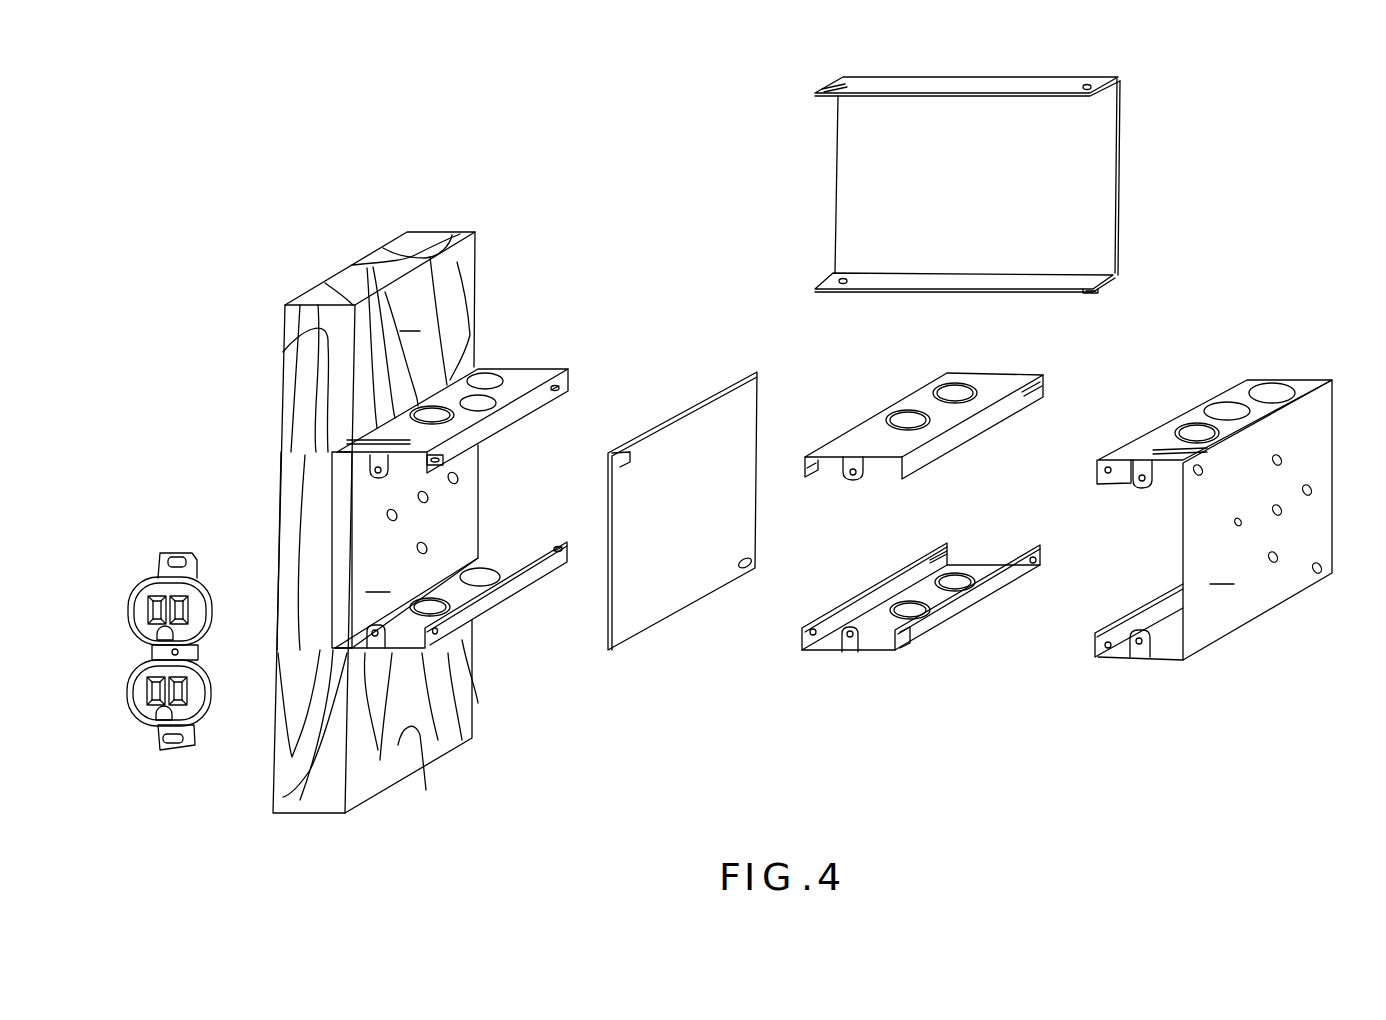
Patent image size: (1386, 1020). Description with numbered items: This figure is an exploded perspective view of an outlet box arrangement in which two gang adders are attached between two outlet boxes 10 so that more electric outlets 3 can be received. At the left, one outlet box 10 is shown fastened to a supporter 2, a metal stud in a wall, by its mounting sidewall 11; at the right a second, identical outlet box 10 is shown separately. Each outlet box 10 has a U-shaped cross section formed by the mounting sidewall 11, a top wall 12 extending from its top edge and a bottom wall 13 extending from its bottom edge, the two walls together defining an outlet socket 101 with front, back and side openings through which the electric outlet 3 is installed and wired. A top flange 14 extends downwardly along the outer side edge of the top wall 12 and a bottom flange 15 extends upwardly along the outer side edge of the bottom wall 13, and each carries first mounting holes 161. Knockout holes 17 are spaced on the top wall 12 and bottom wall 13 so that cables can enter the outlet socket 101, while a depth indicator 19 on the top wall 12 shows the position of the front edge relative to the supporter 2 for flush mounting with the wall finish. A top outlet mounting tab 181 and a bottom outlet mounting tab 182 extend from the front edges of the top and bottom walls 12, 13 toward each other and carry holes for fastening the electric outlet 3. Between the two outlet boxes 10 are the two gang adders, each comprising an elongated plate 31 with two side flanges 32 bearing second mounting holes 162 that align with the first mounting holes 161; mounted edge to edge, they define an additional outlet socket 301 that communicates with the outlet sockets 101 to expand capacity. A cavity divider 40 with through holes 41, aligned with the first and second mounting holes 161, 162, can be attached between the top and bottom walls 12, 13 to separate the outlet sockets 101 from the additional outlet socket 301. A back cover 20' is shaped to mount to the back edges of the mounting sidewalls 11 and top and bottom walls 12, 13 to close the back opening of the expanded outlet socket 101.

The outlet box 10 is at (197, 240).
The supporter 2 is at (375, 522).
The electric outlet 3 is at (147, 592).
The mounting sidewall 11 is at (832, 520).
The top wall 12 is at (372, 294).
The bottom wall 13 is at (412, 733).
The top flange 14 is at (512, 414).
The bottom flange 15 is at (495, 595).
The knockout hole 17 is at (437, 407).
The depth indicator 19 is at (343, 438).
The outlet socket 101 is at (410, 528).
The first mounting holes 161 is at (560, 388).
The second mounting holes 162 is at (802, 467).
The top outlet mounting tab 181 is at (377, 462).
The bottom outlet mounting tab 182 is at (370, 641).
The back cover 20' is at (1015, 170).
The elongated plate 31 is at (993, 390).
The additional outlet socket 301 is at (878, 530).
The side flanges 32 is at (977, 423).
The cavity divider 40 is at (678, 587).
The through holes 41 is at (623, 466).